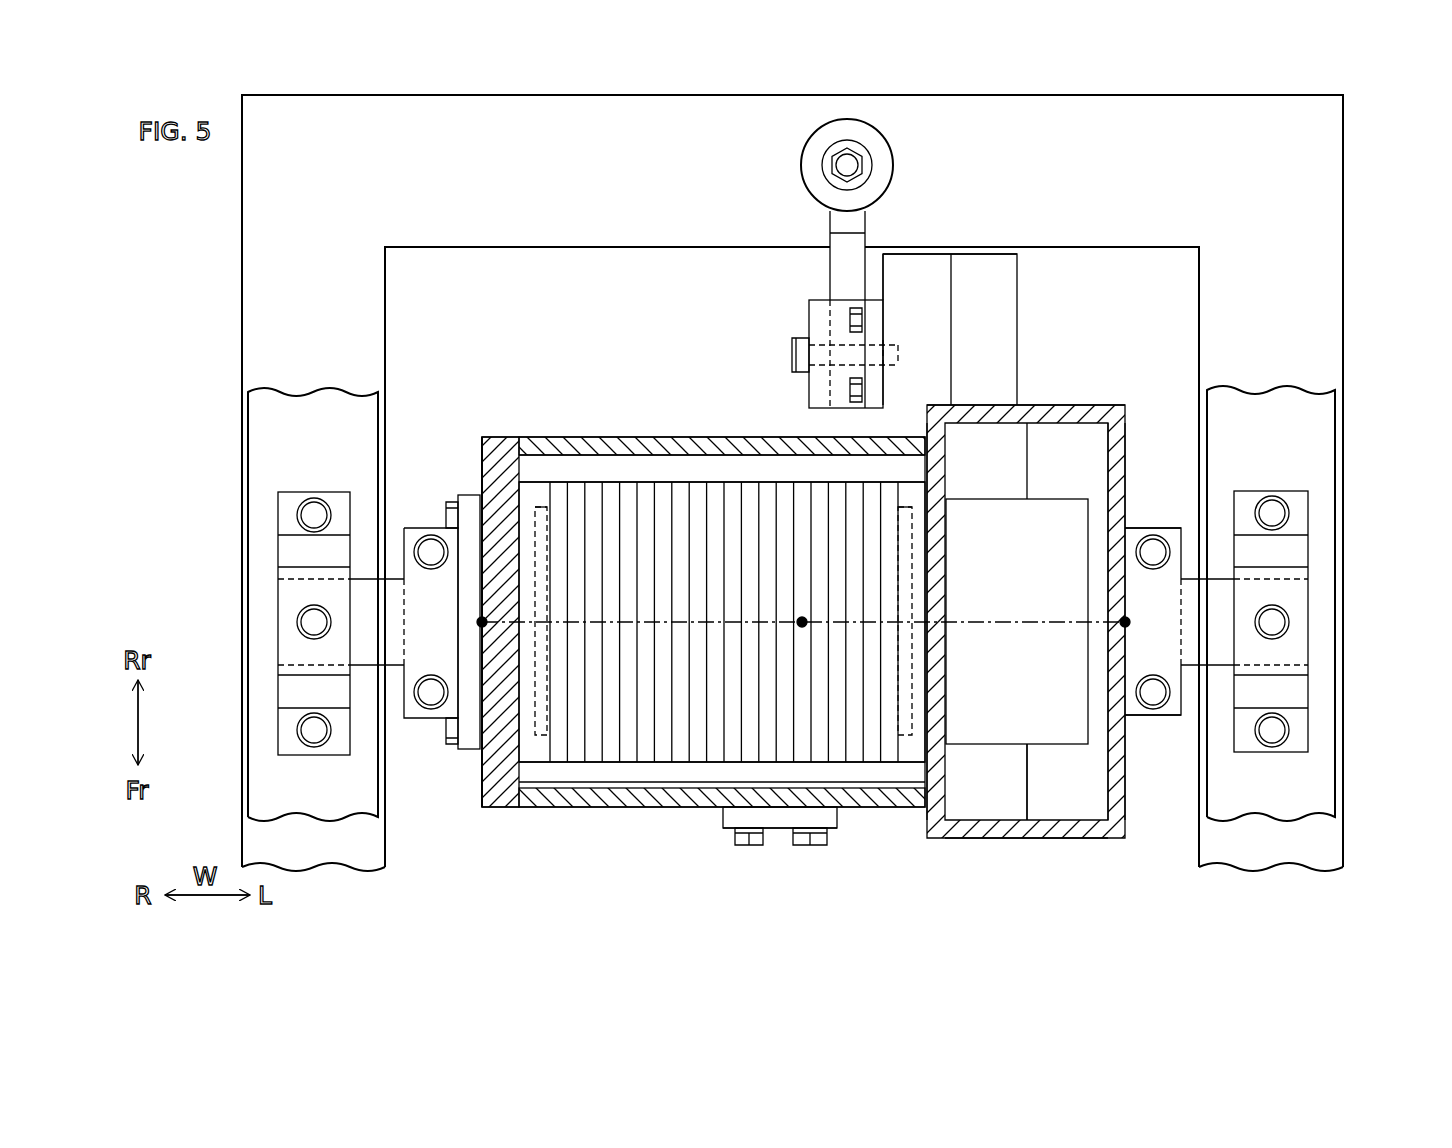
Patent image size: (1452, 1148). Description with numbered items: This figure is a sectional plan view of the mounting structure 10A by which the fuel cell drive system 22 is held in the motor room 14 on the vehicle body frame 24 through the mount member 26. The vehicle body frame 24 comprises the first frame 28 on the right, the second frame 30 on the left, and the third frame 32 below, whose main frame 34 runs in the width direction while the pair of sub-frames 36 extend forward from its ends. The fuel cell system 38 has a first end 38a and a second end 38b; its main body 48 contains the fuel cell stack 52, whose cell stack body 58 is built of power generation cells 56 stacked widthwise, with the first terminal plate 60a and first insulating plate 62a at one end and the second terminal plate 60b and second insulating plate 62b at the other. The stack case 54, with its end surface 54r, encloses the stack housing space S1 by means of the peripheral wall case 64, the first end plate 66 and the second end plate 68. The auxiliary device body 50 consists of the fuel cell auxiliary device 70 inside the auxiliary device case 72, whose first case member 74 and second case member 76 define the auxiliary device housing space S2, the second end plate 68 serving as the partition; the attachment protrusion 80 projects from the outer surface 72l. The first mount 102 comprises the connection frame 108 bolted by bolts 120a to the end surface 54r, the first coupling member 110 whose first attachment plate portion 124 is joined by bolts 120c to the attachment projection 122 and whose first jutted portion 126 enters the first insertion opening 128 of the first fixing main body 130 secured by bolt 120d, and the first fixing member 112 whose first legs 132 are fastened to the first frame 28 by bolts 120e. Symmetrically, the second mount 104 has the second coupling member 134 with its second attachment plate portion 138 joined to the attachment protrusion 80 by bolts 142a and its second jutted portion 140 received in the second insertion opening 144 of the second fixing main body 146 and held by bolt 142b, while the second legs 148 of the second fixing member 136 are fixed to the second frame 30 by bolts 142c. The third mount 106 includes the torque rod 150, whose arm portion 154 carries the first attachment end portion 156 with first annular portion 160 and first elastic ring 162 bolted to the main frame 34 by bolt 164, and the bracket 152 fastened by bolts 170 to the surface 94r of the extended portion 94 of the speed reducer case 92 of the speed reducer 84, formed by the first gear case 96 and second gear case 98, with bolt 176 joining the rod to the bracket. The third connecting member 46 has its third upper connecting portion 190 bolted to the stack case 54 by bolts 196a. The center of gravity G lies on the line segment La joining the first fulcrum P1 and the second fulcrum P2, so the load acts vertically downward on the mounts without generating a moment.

The mounting structure 10A is at (768, 591).
The motor room 14 is at (1172, 303).
The fuel cell drive system 22 is at (768, 609).
The vehicle body frame 24 is at (793, 483).
The mount member 26 is at (792, 459).
The first frame 28 is at (262, 787).
The second frame 30 is at (1322, 795).
The third frame 32 is at (1345, 222).
The main frame 34 is at (633, 247).
The sub-frames 36 is at (255, 333).
The fuel cell system 38 is at (1044, 618).
The first end 38a is at (460, 563).
The second end 38b is at (1088, 855).
The third connecting member 46 is at (818, 853).
The fuel cell system main body 48 is at (900, 365).
The auxiliary device body 50 is at (1058, 405).
The fuel cell stack 52 is at (698, 772).
The stack case 54 is at (668, 609).
The end surface 54r is at (500, 470).
The power generation cells 56 is at (634, 752).
The cell stack body 58 is at (665, 765).
The first terminal plate 60a is at (546, 480).
The second terminal plate 60b is at (910, 512).
The first insulating plate 62a is at (543, 507).
The second insulating plate 62b is at (920, 562).
The peripheral wall case 64 is at (662, 440).
The first end plate 66 is at (497, 440).
The second end plate 68 is at (935, 598).
The fuel cell auxiliary device 70 is at (1040, 499).
The auxiliary device case 72 is at (1044, 619).
The outer surface 72l is at (1120, 437).
The first case member 74 is at (985, 838).
The second case member 76 is at (1040, 838).
The attachment protrusion 80 is at (1172, 592).
The speed reducer 84 is at (996, 299).
The speed reducer case 92 is at (996, 299).
The extended portion 94 is at (982, 262).
The surface 94r is at (887, 280).
The first gear case 96 is at (935, 345).
The second gear case 98 is at (1005, 290).
The first mount 102 is at (270, 478).
The second mount 104 is at (1310, 480).
The third mount 106 is at (820, 154).
The connection frame 108 is at (437, 620).
The first coupling member 110 is at (340, 660).
The first fixing member 112 is at (251, 594).
The bolts 120a is at (453, 745).
The bolts 120c is at (431, 550).
The bolt 120d is at (312, 622).
The bolts 120e is at (312, 515).
The attachment projection 122 is at (400, 655).
The first attachment plate portion 124 is at (454, 674).
The first jutted portion 126 is at (407, 724).
The first insertion opening 128 is at (292, 665).
The first fixing main body 130 is at (292, 593).
The first legs 132 is at (290, 745).
The second coupling member 134 is at (1081, 624).
The second fixing member 136 is at (1332, 594).
The second attachment plate portion 138 is at (1142, 712).
The second jutted portion 140 is at (1178, 655).
The bolts 142a is at (1154, 550).
The bolt 142b is at (1274, 622).
The bolts 142c is at (1274, 513).
The second insertion opening 144 is at (1290, 665).
The second fixing main body 146 is at (1293, 590).
The second legs 148 is at (1295, 742).
The torque rod 150 is at (805, 140).
The bracket 152 is at (798, 335).
The arm portion 154 is at (838, 262).
The first attachment end portion 156 is at (915, 147).
The first annular portion 160 is at (896, 161).
The first elastic ring 162 is at (867, 150).
The bolt 164 is at (838, 165).
The bolts 170 is at (850, 390).
The bolt 176 is at (792, 355).
The third upper connecting portion 190 is at (830, 818).
The bolts 196a is at (800, 846).
The center of gravity G is at (805, 625).
The line segment La is at (1048, 622).
The first fulcrum P1 is at (480, 620).
The second fulcrum P2 is at (1141, 622).
The stack housing space S1 is at (628, 450).
The auxiliary device housing space S2 is at (1095, 787).